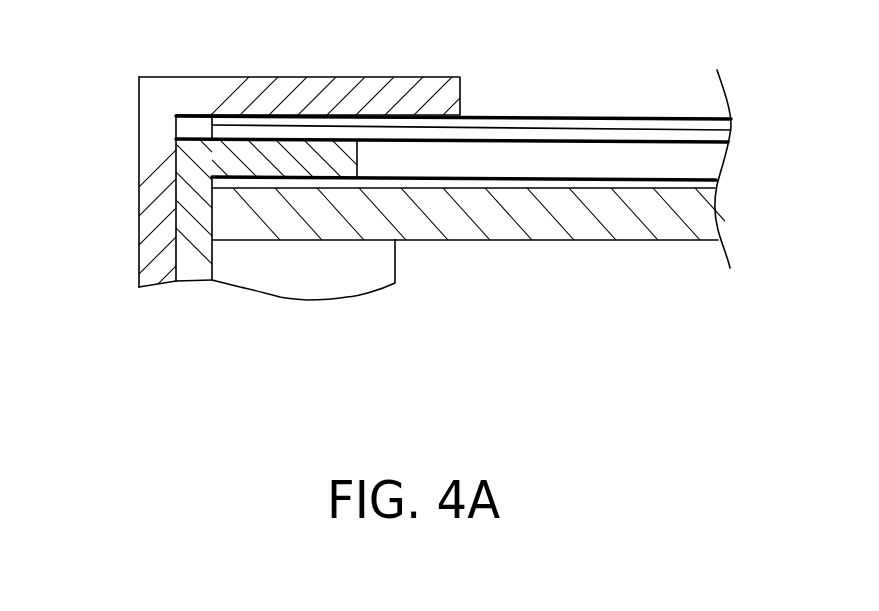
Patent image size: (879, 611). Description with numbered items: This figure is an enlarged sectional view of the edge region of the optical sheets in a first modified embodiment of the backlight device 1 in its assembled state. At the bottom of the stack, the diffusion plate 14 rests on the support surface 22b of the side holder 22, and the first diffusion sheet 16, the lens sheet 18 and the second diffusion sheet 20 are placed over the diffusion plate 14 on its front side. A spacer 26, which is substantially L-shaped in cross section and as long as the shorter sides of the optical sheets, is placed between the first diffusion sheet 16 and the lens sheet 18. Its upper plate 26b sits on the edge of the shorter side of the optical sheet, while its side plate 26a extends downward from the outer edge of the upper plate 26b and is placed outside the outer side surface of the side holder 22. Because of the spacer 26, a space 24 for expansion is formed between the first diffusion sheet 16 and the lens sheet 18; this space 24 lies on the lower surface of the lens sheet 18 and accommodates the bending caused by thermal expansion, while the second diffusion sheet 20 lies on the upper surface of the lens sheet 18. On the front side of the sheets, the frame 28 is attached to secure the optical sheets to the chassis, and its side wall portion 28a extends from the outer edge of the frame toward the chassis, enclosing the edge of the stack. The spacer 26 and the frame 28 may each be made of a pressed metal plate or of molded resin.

The backlight device 1 is at (797, 19).
The diffusion plate 14 is at (528, 242).
The first diffusion sheet 16 is at (603, 182).
The lens sheet 18 is at (580, 128).
The second diffusion sheet 20 is at (647, 117).
The side holder 22 is at (332, 282).
The support surface 22b is at (287, 240).
The space for expansion 24 is at (443, 148).
The spacer 26 is at (374, 160).
The side plate 26a is at (195, 255).
The upper plate 26b is at (273, 157).
The frame 28 is at (137, 152).
The side wall portion 28a is at (143, 199).